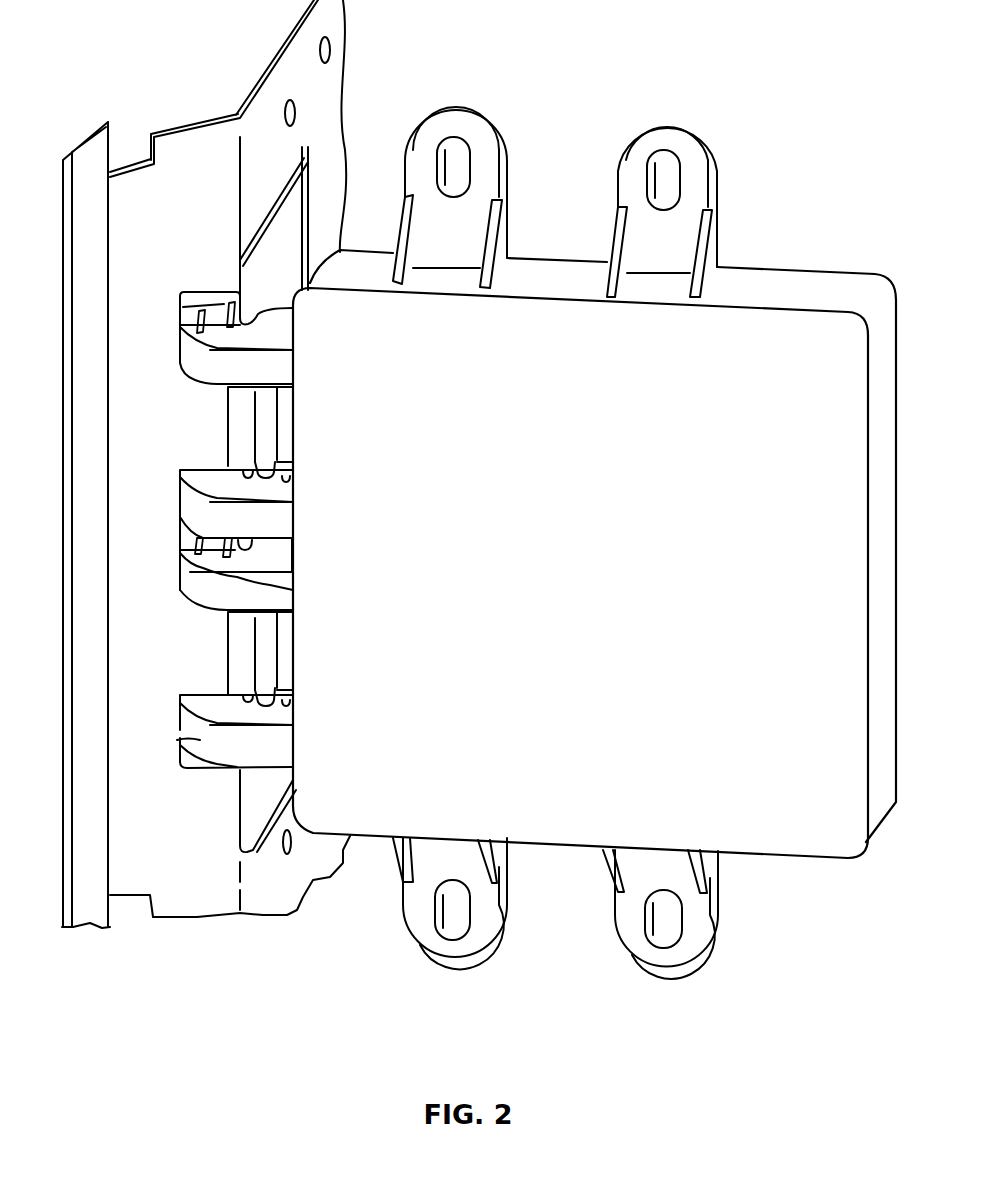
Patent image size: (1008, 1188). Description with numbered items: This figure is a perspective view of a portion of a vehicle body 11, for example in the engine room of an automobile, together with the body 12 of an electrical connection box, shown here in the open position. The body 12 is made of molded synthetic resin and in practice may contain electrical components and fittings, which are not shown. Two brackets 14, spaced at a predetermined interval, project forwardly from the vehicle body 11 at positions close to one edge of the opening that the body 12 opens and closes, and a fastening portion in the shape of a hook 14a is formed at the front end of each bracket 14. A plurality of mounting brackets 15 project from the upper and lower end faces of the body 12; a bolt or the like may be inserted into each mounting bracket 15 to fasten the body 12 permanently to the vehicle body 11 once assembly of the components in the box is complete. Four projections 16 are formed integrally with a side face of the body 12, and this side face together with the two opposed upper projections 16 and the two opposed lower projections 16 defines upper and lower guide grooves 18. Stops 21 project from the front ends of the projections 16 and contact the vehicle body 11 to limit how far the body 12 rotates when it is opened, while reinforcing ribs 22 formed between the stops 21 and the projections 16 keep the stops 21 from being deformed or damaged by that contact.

The vehicle body 11 is at (197, 913).
The body 12 is at (823, 850).
The bracket 14 is at (237, 430).
The hook 14a is at (267, 412).
The mounting bracket 15 is at (480, 123).
The projection 16 is at (190, 364).
The guide groove 18 is at (287, 477).
The stop 21 is at (203, 297).
The reinforcing rib 22 is at (200, 312).